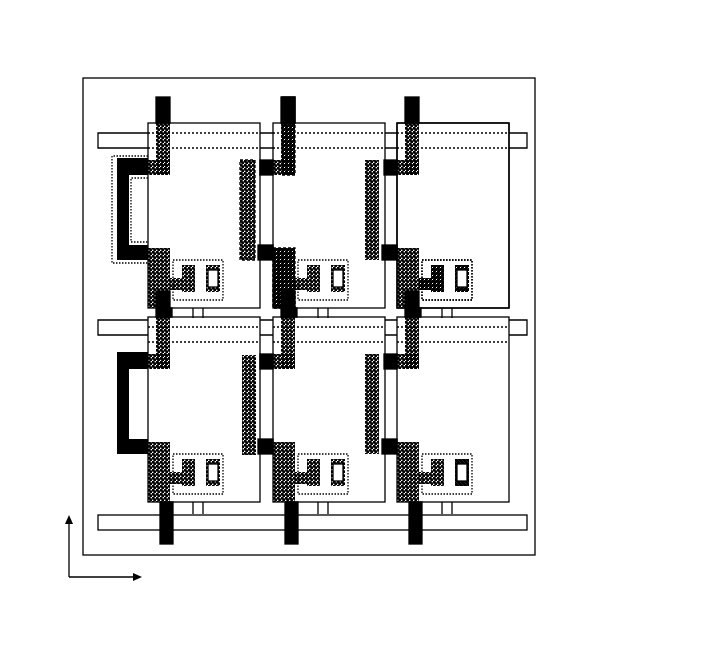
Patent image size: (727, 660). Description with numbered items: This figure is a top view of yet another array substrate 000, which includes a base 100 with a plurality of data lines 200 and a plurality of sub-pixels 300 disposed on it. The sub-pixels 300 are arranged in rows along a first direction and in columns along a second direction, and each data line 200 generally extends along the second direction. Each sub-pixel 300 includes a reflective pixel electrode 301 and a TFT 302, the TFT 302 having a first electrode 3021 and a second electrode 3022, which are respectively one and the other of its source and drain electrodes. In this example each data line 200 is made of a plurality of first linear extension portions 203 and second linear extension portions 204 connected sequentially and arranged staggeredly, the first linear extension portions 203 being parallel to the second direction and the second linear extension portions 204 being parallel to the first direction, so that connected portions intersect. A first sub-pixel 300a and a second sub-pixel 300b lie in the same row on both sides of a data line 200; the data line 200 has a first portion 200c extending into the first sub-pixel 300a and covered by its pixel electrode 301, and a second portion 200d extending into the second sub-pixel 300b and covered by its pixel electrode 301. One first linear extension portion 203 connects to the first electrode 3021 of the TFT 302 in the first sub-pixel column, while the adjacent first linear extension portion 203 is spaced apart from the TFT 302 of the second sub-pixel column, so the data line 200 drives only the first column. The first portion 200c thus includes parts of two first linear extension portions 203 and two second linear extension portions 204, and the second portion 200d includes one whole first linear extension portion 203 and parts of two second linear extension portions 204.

The array substrate 000 is at (83, 19).
The base 100 is at (522, 92).
The data line 200 is at (288, 92).
The first portion 200c is at (288, 177).
The second portion 200d is at (240, 200).
The first linear extension portion 203 is at (112, 208).
The second linear extension portion 204 is at (112, 170).
The sub-pixel 300 is at (511, 207).
The first sub-pixel 300a is at (325, 163).
The second sub-pixel 300b is at (193, 161).
The reflective pixel electrode 301 is at (487, 235).
The TFT 302 is at (472, 282).
The first electrode 3021 is at (462, 470).
The second electrode 3022 is at (470, 487).